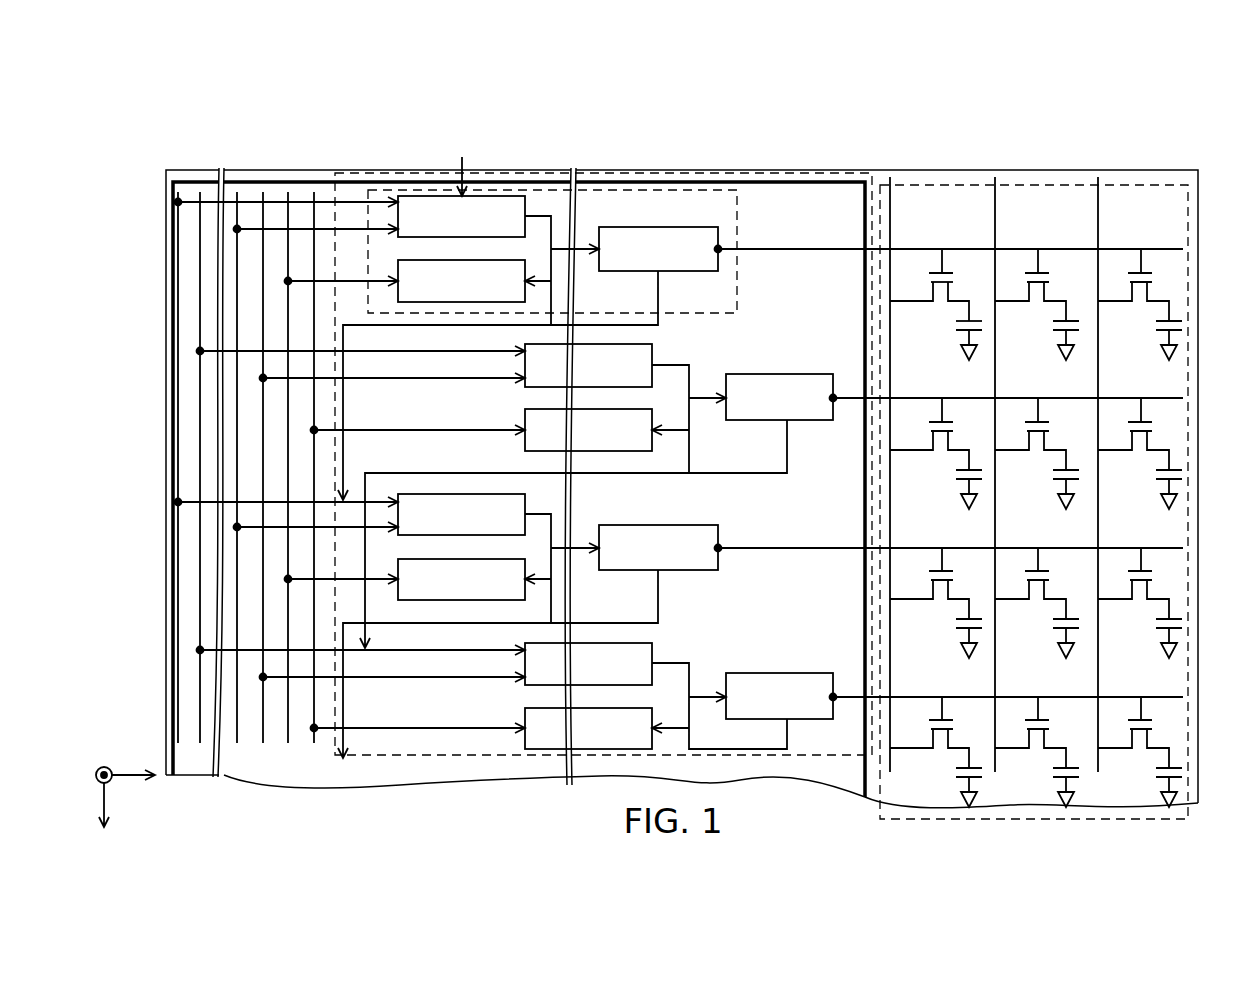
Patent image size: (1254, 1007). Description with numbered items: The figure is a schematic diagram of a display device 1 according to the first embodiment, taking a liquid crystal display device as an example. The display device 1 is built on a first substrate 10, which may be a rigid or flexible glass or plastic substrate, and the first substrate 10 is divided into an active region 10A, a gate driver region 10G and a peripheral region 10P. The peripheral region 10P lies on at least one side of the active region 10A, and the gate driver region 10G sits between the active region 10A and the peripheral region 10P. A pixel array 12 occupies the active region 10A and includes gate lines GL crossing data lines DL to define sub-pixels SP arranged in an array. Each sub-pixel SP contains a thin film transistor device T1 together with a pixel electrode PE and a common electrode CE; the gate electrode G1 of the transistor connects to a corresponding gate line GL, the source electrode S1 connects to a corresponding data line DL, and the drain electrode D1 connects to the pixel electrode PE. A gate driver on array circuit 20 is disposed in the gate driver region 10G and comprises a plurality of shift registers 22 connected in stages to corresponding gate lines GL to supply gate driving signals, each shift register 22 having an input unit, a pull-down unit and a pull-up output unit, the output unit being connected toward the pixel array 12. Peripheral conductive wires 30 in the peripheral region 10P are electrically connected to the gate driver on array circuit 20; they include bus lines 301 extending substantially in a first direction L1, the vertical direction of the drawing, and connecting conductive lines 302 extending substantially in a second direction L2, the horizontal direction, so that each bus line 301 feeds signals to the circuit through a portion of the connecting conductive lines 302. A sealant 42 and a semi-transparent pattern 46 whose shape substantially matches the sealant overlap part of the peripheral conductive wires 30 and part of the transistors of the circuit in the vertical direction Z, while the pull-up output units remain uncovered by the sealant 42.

The display device 1 is at (1158, 74).
The first substrate 10 is at (1199, 237).
The peripheral region 10P is at (322, 98).
The gate driver region 10G is at (330, 98).
The active region 10A is at (1188, 98).
The pixel array 12 is at (939, 184).
The gate driver on array circuit 20 is at (803, 181).
The shift register 22 is at (661, 190).
The peripheral conductive wires 30 is at (313, 467).
The bus line 301 is at (178, 278).
The connecting conductive line 302 is at (255, 352).
The sealant 42 is at (572, 160).
The semi-transparent pattern 46 is at (380, 467).
The gate line GL is at (902, 248).
The data line DL is at (888, 205).
The sub-pixel SP is at (939, 294).
The thin film transistor device T1 is at (939, 263).
The gate electrode G1 is at (924, 264).
The source electrode S1 is at (911, 290).
The drain electrode D1 is at (968, 300).
The pixel electrode PE is at (949, 322).
The common electrode CE is at (960, 353).
The vertical direction Z is at (104, 763).
The first direction L1 is at (105, 797).
The second direction L2 is at (129, 772).